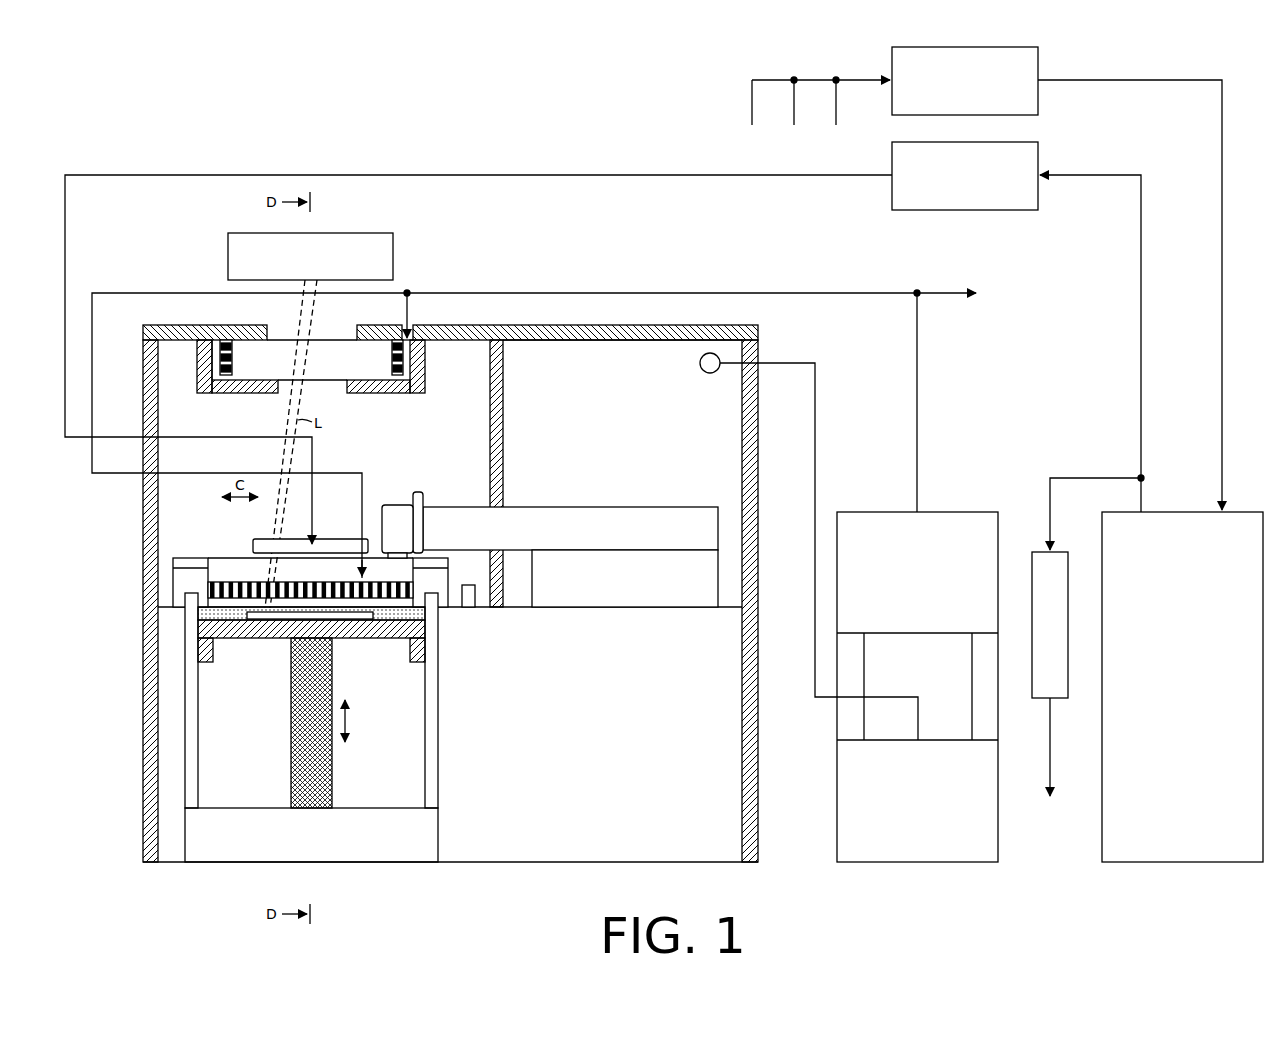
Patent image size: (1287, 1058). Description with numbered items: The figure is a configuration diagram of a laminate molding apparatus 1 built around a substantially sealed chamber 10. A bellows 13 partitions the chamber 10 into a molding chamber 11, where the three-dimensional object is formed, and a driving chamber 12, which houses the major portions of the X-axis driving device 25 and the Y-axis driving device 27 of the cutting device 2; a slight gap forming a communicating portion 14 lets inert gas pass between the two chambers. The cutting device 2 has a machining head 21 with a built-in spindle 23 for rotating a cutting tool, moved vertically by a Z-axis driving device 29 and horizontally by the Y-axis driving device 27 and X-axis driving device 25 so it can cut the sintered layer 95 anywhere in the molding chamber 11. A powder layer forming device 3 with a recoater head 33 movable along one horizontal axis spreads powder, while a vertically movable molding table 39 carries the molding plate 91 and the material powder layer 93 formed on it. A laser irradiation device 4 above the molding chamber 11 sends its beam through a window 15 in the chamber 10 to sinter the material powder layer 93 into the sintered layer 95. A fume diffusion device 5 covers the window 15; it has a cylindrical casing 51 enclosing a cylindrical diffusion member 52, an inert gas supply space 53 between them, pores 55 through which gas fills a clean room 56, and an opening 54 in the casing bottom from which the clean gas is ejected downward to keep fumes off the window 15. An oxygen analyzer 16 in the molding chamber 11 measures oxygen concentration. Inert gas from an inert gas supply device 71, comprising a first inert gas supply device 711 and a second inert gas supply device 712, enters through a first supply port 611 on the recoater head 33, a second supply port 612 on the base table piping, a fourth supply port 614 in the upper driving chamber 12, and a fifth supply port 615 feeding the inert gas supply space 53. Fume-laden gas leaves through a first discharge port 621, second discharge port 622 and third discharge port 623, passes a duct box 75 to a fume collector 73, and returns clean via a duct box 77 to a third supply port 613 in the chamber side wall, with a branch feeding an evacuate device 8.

The laminate molding apparatus 1 is at (147, 131).
The cutting device 2 is at (548, 526).
The powder layer forming device 3 is at (310, 676).
The laser irradiation device 4 is at (368, 236).
The fume diffusion device 5 is at (324, 391).
The evacuate device 8 is at (1060, 572).
The chamber 10 is at (143, 395).
The molding chamber 11 is at (407, 455).
The driving chamber 12 is at (577, 410).
The bellows 13 is at (503, 437).
The communicating portion 14 is at (513, 346).
The window 15 is at (326, 337).
The oxygen analyzer 16 is at (470, 585).
The machining head 21 is at (397, 518).
The spindle 23 is at (390, 556).
The X-axis driving device 25 is at (712, 565).
The Y-axis driving device 27 is at (608, 515).
The Z-axis driving device 29 is at (421, 490).
The recoater head 33 is at (205, 557).
The molding table 39 is at (228, 633).
The casing 51 is at (425, 378).
The diffusion member 52 is at (236, 350).
The inert gas supply space 53 is at (225, 393).
The opening 54 is at (335, 393).
The pores 55 is at (390, 369).
The clean room 56 is at (341, 367).
The inert gas supply device 71 is at (906, 643).
The fume collector 73 is at (1245, 518).
The duct box 75 is at (1030, 108).
The duct box 77 is at (1028, 203).
The molding plate 91 is at (335, 640).
The material powder layer 93 is at (360, 640).
The sintered layer 95 is at (262, 634).
The first supply port 611 is at (245, 580).
The second supply port 612 is at (553, 431).
The third supply port 613 is at (320, 538).
The fourth supply port 614 is at (699, 365).
The fifth supply port 615 is at (400, 325).
The first discharge port 621 is at (751, 114).
The second discharge port 622 is at (793, 112).
The third discharge port 623 is at (835, 112).
The first inert gas supply device 711 is at (875, 528).
The second inert gas supply device 712 is at (847, 762).